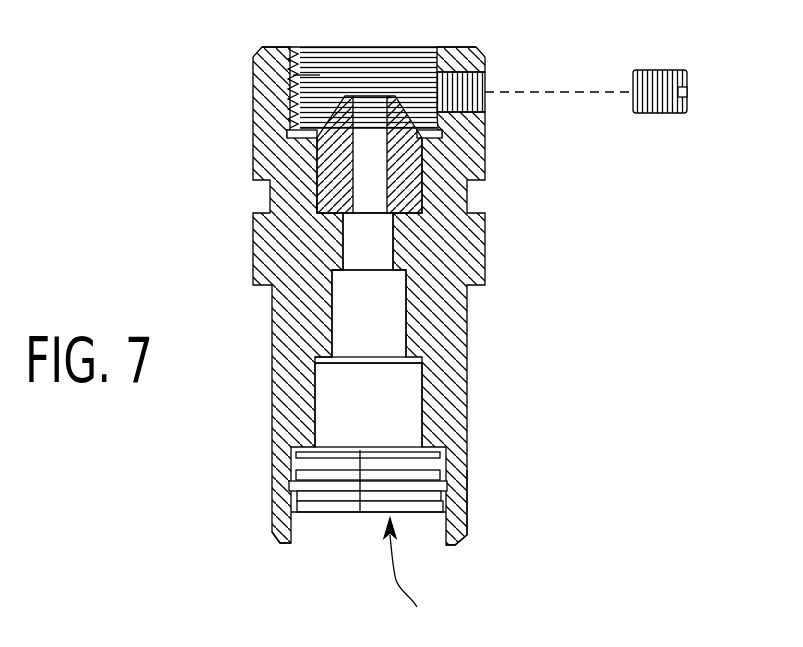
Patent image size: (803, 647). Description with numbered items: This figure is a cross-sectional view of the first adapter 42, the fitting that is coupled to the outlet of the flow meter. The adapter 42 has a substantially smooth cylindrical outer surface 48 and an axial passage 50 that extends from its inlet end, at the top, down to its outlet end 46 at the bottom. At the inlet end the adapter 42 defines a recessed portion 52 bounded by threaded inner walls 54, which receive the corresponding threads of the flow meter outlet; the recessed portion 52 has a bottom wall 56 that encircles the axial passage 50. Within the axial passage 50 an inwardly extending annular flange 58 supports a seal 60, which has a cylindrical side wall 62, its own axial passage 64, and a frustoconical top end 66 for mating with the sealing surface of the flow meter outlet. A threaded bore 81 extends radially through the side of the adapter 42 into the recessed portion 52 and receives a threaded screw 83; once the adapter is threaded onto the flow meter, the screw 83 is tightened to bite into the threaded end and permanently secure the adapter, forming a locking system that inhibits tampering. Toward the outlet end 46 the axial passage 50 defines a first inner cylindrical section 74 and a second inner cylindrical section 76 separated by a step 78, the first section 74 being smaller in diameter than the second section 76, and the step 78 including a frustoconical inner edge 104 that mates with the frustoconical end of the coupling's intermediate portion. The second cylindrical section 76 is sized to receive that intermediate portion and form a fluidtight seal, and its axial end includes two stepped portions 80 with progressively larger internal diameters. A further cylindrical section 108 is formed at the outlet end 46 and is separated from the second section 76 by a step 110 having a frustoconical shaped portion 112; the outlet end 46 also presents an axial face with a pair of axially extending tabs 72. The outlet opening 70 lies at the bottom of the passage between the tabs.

The first adapter 42 is at (518, 262).
The outlet end 46 is at (455, 545).
The cylindrical outer surface 48 is at (485, 152).
The axial passage 50 is at (407, 577).
The recessed portion 52 is at (367, 68).
The threaded inner walls 54 is at (313, 100).
The bottom wall 56 is at (293, 123).
The annular flange 58 is at (338, 274).
The seal 60 is at (405, 183).
The cylindrical side wall 62 is at (303, 200).
The axial passage 64 is at (367, 200).
The frustoconical top end 66 is at (330, 107).
The outlet opening 70 is at (332, 512).
The axially extending tabs 72 is at (283, 543).
The first inner cylindrical section 74 is at (402, 327).
The second inner cylindrical section 76 is at (412, 425).
The step 78 is at (420, 366).
The stepped portions 80 is at (440, 478).
The threaded bore 81 is at (482, 103).
The threaded screw 83 is at (670, 70).
The frustoconical inner edge 104 is at (345, 355).
The cylindrical section 108 is at (306, 466).
The step 110 is at (438, 450).
The frustoconical shaped portion 112 is at (360, 512).